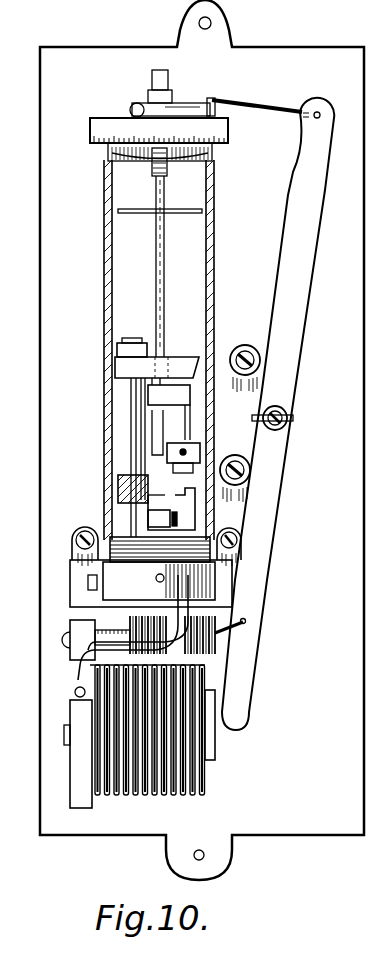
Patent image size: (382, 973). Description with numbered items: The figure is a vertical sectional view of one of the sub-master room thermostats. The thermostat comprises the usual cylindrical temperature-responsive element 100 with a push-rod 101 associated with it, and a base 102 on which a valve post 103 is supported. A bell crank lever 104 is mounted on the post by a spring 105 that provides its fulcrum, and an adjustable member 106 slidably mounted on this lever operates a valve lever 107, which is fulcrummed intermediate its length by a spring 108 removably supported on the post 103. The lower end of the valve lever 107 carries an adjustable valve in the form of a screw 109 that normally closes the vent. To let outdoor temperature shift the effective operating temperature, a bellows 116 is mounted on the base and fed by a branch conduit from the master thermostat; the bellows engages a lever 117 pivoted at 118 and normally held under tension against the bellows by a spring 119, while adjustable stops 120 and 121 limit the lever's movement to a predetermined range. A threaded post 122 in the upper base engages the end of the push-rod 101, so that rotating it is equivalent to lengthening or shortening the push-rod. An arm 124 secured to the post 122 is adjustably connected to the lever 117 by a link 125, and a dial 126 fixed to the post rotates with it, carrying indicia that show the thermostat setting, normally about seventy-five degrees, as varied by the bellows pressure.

The cylindrical temperature-responsive element 100 is at (104, 246).
The push-rod 101 is at (162, 265).
The base 102 is at (112, 588).
The valve post 103 is at (160, 478).
The bell crank lever 104 is at (193, 412).
The spring 105 is at (199, 376).
The adjustable member 106 is at (199, 450).
The valve lever 107 is at (118, 481).
The spring 108 is at (147, 512).
The screw 109 is at (196, 522).
The bellows 116 is at (110, 806).
The lever 117 is at (263, 572).
The pivot 118 is at (293, 418).
The spring 119 is at (220, 648).
The adjustable stop 120 is at (252, 468).
The adjustable stop 121 is at (262, 360).
The threaded post 122 is at (169, 77).
The arm 124 is at (192, 102).
The link 125 is at (268, 100).
The dial 126 is at (228, 136).